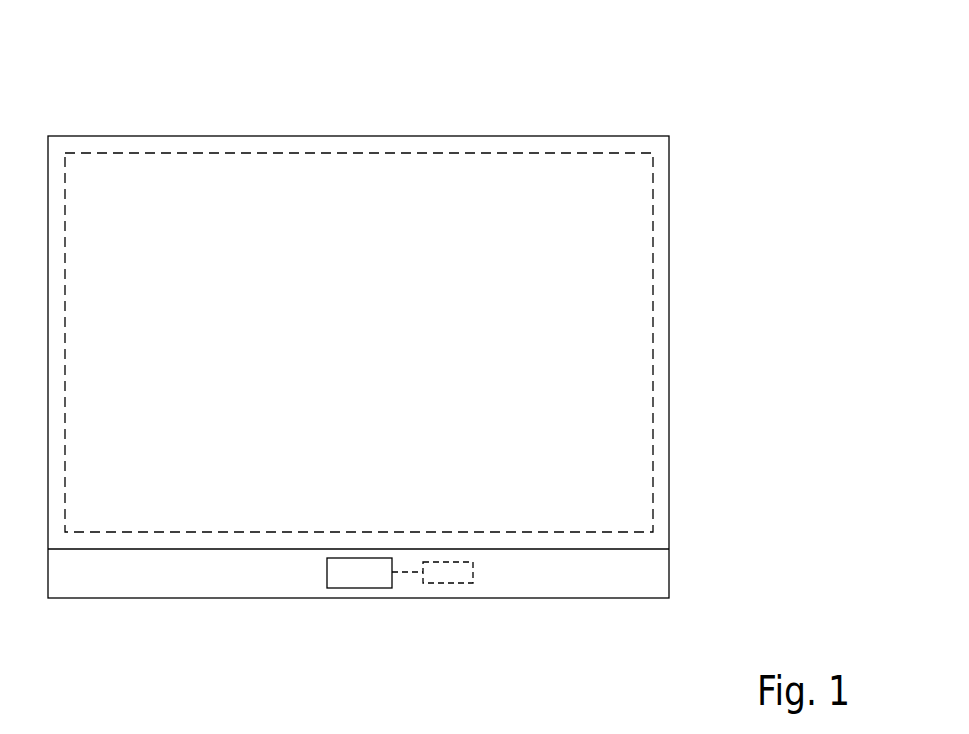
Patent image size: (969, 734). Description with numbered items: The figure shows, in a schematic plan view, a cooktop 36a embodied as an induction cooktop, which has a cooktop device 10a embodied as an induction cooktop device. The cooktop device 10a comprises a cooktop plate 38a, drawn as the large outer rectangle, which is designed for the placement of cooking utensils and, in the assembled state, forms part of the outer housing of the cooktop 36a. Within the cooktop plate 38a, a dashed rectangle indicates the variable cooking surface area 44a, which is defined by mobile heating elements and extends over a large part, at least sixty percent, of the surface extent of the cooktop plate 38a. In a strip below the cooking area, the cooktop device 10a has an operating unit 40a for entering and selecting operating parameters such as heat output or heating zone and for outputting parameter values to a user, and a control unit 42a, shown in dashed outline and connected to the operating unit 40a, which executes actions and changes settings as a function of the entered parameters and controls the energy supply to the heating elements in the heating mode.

The cooktop device 10a is at (739, 188).
The cooktop 36a is at (791, 103).
The cooktop plate 38a is at (540, 188).
The operating unit 40a is at (361, 588).
The control unit 42a is at (450, 590).
The variable cooking surface area 44a is at (653, 318).